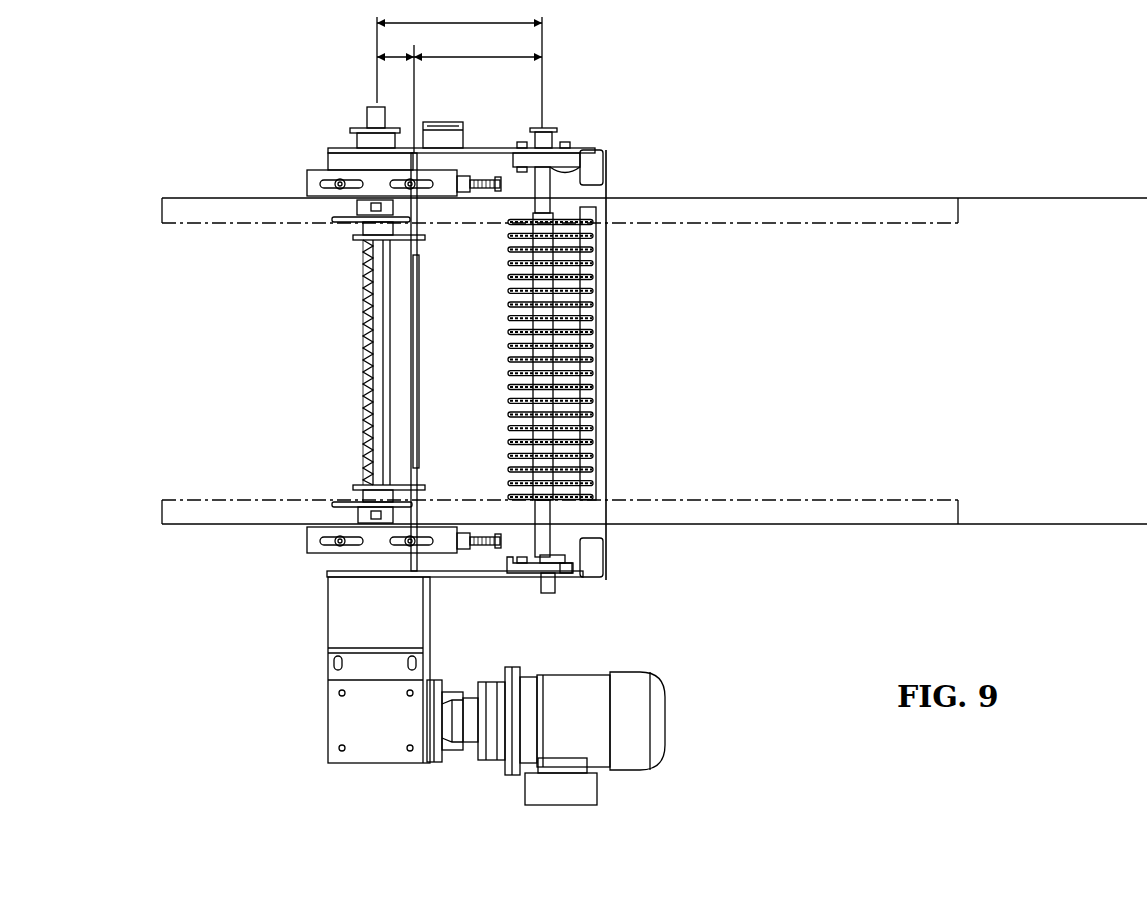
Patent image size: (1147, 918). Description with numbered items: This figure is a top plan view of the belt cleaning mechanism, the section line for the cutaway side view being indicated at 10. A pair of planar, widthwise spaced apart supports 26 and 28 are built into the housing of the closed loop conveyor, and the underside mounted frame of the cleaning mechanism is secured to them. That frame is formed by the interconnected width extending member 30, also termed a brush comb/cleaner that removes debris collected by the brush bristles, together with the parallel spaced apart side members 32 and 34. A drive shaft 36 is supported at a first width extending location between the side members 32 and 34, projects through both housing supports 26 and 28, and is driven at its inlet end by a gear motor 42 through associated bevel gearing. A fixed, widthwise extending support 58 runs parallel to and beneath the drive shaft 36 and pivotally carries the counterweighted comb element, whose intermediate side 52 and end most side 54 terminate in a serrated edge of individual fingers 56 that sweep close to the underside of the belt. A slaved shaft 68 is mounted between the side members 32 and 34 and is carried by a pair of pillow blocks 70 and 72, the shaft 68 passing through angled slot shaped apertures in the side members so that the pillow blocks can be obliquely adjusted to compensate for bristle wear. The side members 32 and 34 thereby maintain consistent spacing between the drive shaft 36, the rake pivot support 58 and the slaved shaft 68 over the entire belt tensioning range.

The section line 10- 10 is at (352, 446).
The support 26 is at (1118, 526).
The support 28 is at (1048, 196).
The width extending member 30 is at (608, 330).
The side member 32 is at (480, 578).
The side member 34 is at (482, 147).
The drive shaft 36 is at (352, 147).
The gear motor 42 is at (612, 743).
The intermediate side 52 is at (402, 346).
The end most side 54 is at (362, 294).
The fingers 56 is at (362, 333).
The widthwise extending support 58 is at (420, 208).
The slaved shaft 68 is at (552, 205).
The pillow block 70 is at (512, 563).
The pillow block 72 is at (578, 152).